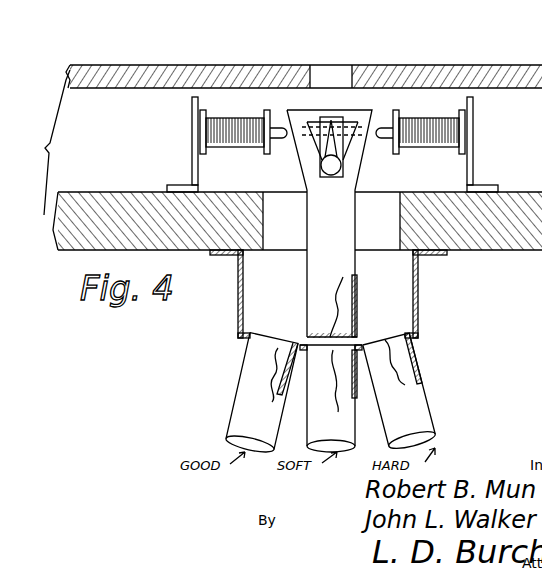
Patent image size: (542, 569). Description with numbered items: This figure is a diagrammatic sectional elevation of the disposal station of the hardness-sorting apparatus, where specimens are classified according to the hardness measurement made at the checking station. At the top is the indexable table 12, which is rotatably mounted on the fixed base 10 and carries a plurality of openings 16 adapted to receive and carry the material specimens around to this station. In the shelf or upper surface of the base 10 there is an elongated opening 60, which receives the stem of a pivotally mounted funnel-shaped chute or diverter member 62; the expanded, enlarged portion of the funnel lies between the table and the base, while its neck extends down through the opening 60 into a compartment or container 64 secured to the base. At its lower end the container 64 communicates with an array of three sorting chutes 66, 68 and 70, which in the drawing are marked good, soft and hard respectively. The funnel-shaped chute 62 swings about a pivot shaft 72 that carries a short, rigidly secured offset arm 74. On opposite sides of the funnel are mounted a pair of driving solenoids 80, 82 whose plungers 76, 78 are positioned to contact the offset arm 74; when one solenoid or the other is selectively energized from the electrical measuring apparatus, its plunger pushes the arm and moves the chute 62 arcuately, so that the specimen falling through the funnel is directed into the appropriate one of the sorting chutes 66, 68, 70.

The fixed base 10 is at (532, 228).
The indexable table 12 is at (477, 74).
The openings 16 is at (342, 76).
The elongated opening 60 is at (270, 233).
The funnel-shaped chute 62 is at (352, 299).
The container 64 is at (418, 263).
The sorting chute 66 is at (252, 374).
The sorting chute 68 is at (337, 433).
The sorting chute 70 is at (420, 413).
The pivot shaft 72 is at (331, 176).
The offset arm 74 is at (331, 120).
The plunger 76 is at (278, 130).
The plunger 78 is at (373, 132).
The driving solenoid 80 is at (212, 138).
The driving solenoid 82 is at (413, 140).